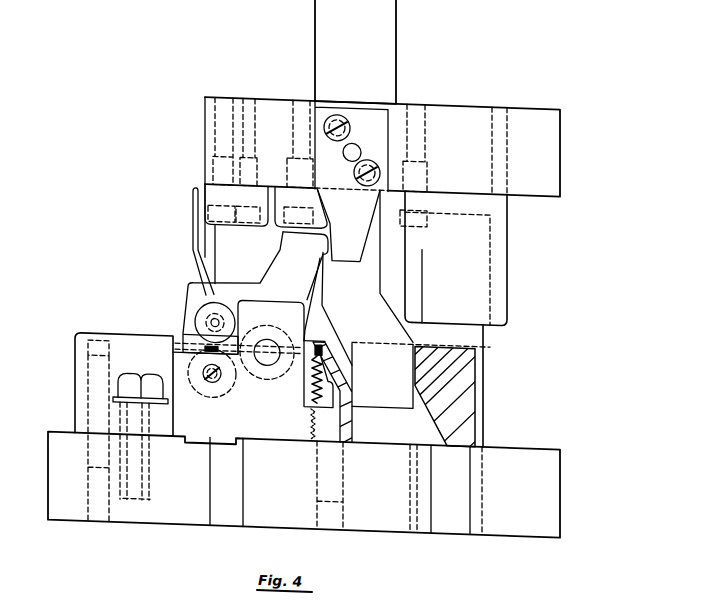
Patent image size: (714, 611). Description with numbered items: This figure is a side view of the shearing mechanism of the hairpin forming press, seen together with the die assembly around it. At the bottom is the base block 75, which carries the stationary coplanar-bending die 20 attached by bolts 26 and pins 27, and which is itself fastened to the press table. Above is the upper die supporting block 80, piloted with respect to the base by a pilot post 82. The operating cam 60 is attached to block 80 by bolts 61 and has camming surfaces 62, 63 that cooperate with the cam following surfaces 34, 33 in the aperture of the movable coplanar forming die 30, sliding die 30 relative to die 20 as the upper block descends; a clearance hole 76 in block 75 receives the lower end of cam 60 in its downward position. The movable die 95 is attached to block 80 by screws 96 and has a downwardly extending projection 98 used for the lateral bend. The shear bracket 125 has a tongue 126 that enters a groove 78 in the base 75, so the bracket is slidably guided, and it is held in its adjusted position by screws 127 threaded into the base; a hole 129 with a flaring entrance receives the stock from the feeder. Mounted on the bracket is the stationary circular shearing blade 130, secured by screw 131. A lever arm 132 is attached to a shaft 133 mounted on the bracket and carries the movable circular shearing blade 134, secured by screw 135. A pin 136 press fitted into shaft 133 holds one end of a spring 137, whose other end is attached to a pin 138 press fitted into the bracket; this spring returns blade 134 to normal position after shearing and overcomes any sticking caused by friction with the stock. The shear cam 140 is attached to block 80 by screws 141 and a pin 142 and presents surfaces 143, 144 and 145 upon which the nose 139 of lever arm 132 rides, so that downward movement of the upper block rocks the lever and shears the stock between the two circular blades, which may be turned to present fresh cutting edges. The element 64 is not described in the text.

The stationary coplanar-bending die 20 is at (77, 338).
The bolts 26 is at (100, 342).
The pins 27 is at (121, 332).
The movable coplanar forming die 30 is at (477, 378).
The cam following surface 33 is at (430, 400).
The cam following surface 34 is at (341, 346).
The operating cam 60 is at (407, 327).
The bolts 61 is at (290, 148).
The camming surface 62 is at (330, 320).
The camming surface 63 is at (404, 290).
The cam lever 64 is at (322, 269).
The base block 75 is at (556, 467).
The clearance hole 76 is at (405, 511).
The groove 78 is at (196, 441).
The upper die supporting block 80 is at (556, 132).
The pilot post 82 is at (486, 320).
The movable die 95 is at (207, 180).
The screws 96 is at (214, 164).
The downwardly extending projection 98 is at (193, 211).
The shear bracket 125 is at (160, 336).
The tongue 126 is at (189, 436).
The screws 127 is at (130, 379).
The hole 129 is at (213, 338).
The stationary circular shearing blade 130 is at (214, 384).
The screw 131 is at (207, 373).
The lever arm 132 is at (276, 247).
The shaft 133 is at (267, 330).
The circular shearing blade 134 is at (198, 284).
The screw 135 is at (211, 313).
The pin 136 is at (310, 360).
The spring 137 is at (302, 415).
The pin 138 is at (305, 425).
The nose 139 is at (328, 247).
The shear cam 140 is at (385, 112).
The screws 141 is at (328, 108).
The pin 142 is at (352, 131).
The cam surface 143 is at (331, 221).
The cam surface 144 is at (328, 191).
The cam surface 145 is at (317, 145).